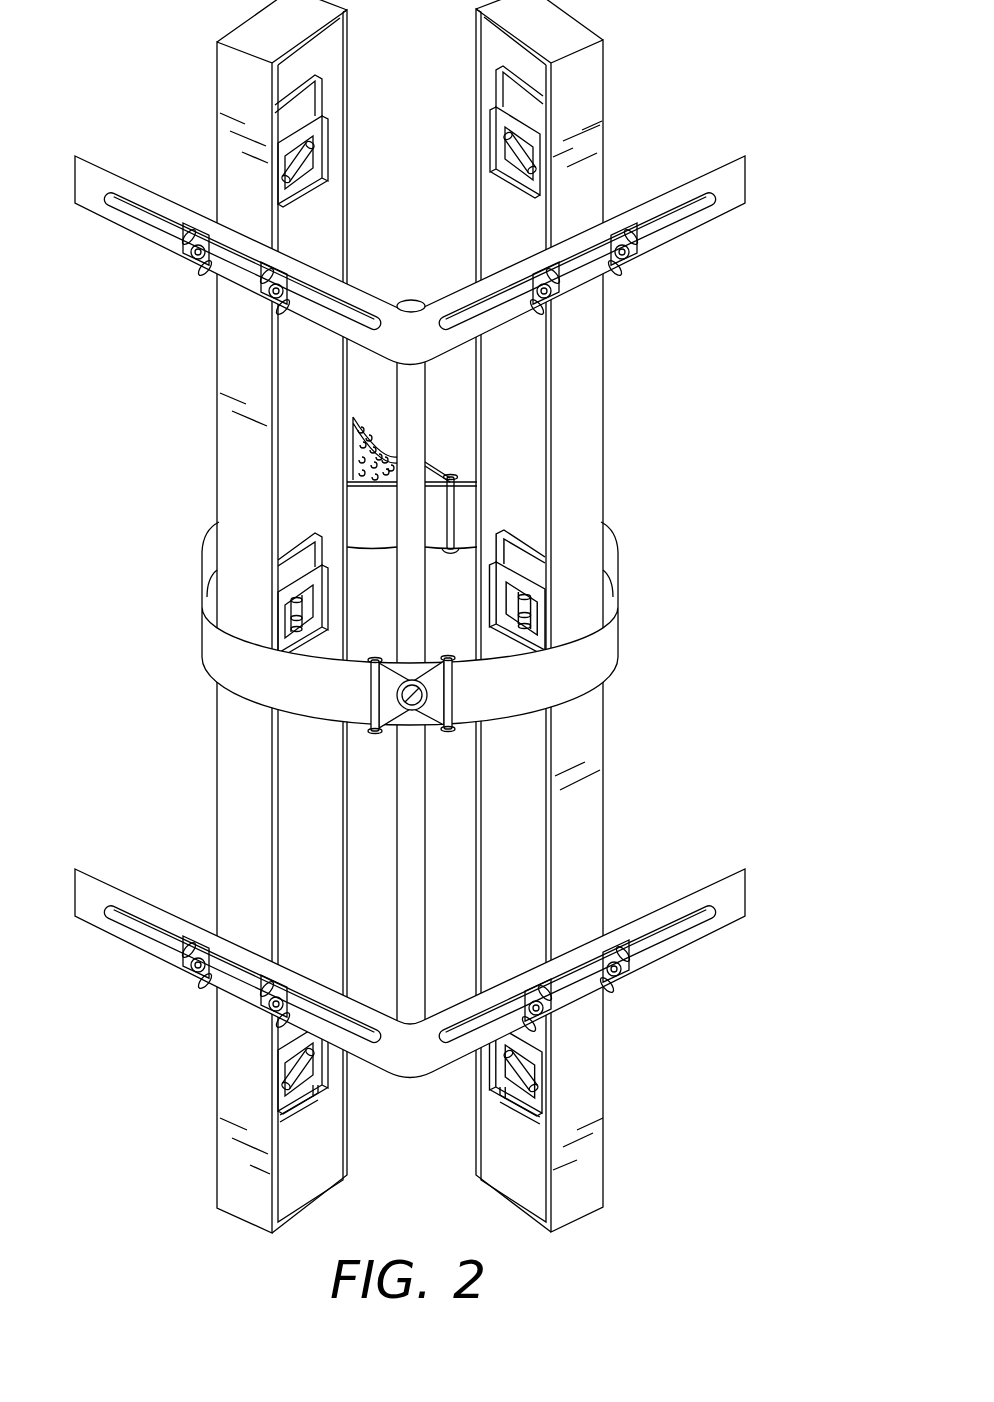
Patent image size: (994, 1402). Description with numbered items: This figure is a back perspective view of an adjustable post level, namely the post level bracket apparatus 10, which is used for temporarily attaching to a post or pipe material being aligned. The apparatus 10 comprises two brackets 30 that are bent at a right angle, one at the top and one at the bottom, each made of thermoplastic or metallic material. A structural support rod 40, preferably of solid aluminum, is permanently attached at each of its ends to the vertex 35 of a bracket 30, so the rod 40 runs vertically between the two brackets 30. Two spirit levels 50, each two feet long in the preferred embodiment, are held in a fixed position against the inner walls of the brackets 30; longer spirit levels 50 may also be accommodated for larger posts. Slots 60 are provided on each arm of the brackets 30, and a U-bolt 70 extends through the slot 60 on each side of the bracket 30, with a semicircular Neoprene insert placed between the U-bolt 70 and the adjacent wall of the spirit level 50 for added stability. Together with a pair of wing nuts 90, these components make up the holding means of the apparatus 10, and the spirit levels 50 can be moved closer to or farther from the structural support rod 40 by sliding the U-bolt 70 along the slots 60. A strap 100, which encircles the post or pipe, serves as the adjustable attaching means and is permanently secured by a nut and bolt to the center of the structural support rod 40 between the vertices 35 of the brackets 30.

The post level bracket apparatus 10 is at (762, 68).
The bracket 30 is at (464, 641).
The vertex 35 is at (428, 347).
The structural support rod 40 is at (413, 910).
The spirit level 50 is at (217, 78).
The slot 60 is at (700, 212).
The U-bolt 70 is at (267, 292).
The wing nut 90 is at (262, 266).
The strap 100 is at (535, 705).